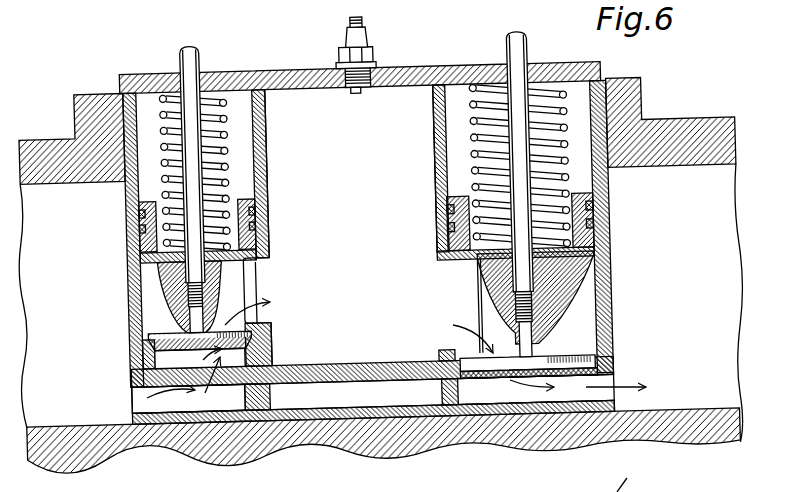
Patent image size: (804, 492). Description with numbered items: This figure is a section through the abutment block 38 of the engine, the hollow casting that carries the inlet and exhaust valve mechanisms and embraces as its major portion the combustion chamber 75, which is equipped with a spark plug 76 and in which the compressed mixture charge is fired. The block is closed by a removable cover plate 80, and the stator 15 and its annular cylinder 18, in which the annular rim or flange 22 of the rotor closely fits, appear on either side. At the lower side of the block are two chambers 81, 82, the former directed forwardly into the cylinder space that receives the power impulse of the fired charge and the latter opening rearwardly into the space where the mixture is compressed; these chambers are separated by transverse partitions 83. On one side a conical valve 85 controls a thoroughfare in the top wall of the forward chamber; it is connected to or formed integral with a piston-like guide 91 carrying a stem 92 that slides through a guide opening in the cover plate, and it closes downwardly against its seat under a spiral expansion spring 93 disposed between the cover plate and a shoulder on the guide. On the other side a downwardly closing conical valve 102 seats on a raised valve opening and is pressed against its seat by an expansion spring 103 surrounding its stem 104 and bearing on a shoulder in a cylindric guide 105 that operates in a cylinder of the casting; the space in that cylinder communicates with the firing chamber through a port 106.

The stator 15 is at (644, 100).
The annular cylinder 18 is at (720, 227).
The annular rim or flange 22 is at (712, 437).
The abutment block 38 is at (122, 200).
The combustion chamber 75 is at (372, 125).
The spark plug 76 is at (364, 34).
The cover plate 80 is at (432, 65).
The chamber 81 is at (492, 390).
The chamber 82 is at (225, 400).
The transverse partitions 83 is at (390, 362).
The conical valve 85 is at (482, 298).
The piston-like guide 91 is at (583, 255).
The stem 92 is at (531, 41).
The spiral expansion spring 93 is at (471, 132).
The conical valve 102 is at (128, 318).
The expansion spring 103 is at (251, 143).
The stem 104 is at (200, 66).
The cylindric guide 105 is at (248, 190).
The port 106 is at (244, 285).